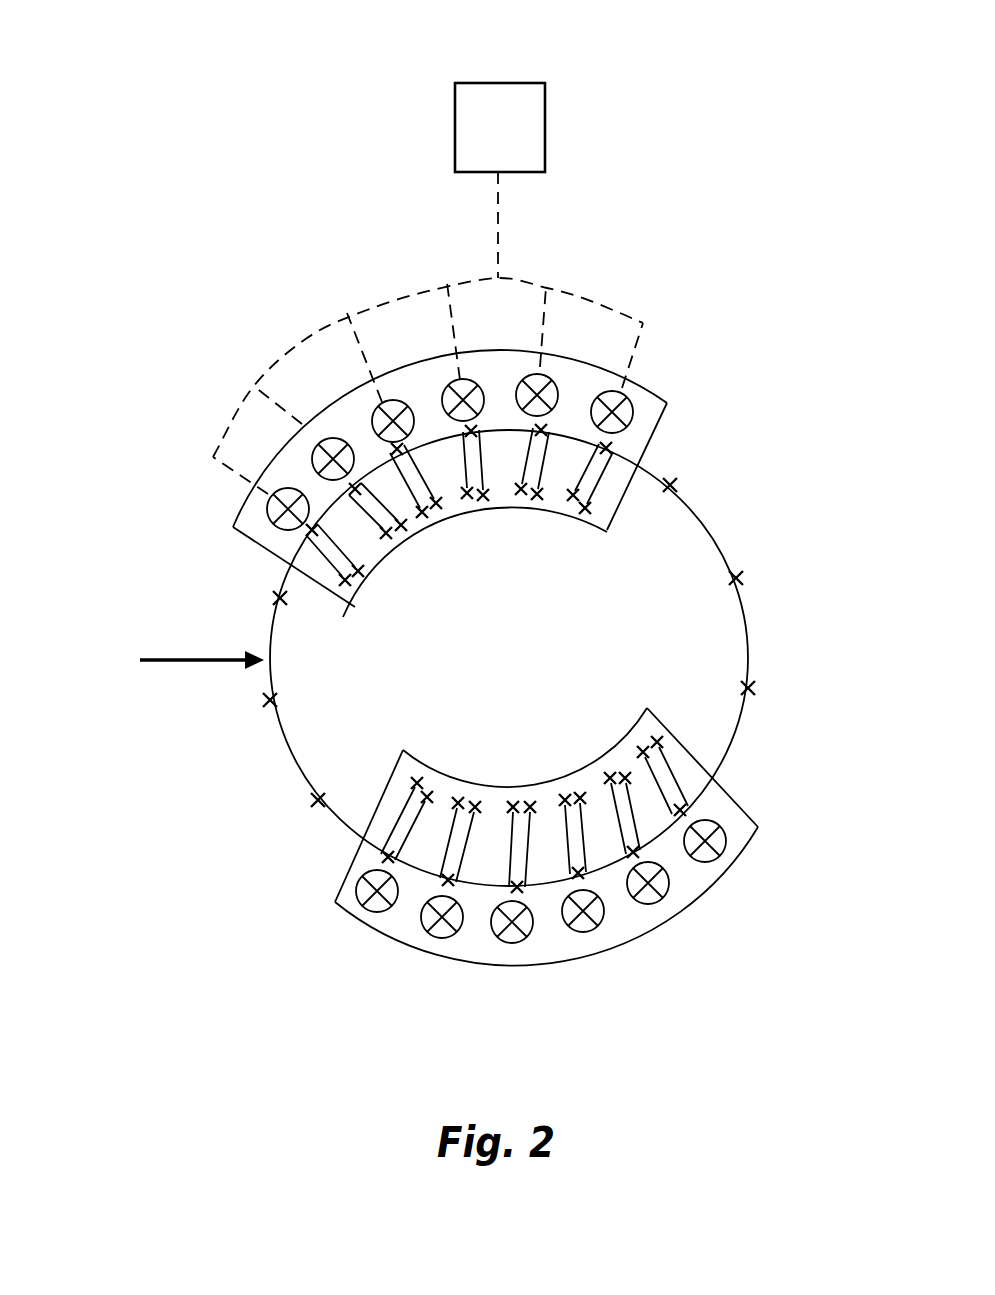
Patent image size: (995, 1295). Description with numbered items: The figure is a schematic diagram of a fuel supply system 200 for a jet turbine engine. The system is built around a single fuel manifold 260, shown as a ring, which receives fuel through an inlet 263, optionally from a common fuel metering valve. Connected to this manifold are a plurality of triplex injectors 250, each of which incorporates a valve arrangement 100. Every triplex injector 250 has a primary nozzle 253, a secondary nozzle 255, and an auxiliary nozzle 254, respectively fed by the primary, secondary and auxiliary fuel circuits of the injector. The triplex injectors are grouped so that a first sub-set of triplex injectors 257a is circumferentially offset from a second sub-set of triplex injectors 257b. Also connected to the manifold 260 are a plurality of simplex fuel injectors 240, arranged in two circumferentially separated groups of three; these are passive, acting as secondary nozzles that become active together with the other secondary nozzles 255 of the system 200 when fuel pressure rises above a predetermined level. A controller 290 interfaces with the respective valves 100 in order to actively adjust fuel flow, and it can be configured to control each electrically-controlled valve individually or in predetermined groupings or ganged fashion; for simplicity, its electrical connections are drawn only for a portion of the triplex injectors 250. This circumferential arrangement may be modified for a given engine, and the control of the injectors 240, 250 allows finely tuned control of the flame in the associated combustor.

The fuel supply system 200 is at (180, 250).
The controller 290 is at (528, 83).
The fuel manifold 260 is at (340, 830).
The triplex injector 250 is at (566, 386).
The first sub-set of triplex injectors 257a is at (250, 540).
The second sub-set of triplex injectors 257b is at (356, 920).
The valve arrangement 100 is at (333, 442).
The secondary nozzle 255 is at (414, 505).
The primary nozzle 253 is at (362, 574).
The auxiliary nozzle 254 is at (347, 587).
The simplex fuel injector 240 is at (684, 481).
The inlet 263 is at (179, 644).